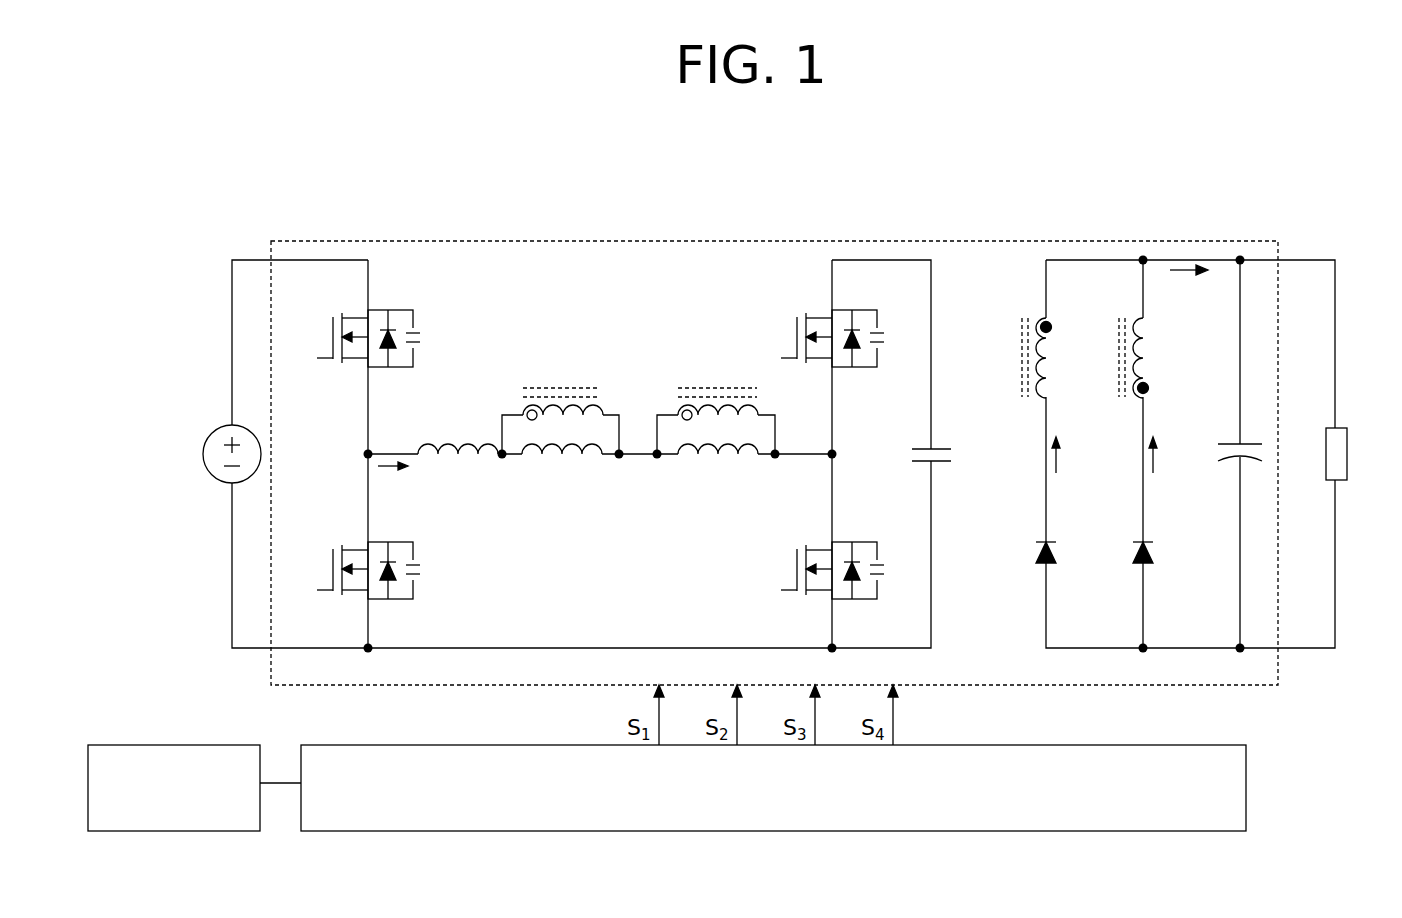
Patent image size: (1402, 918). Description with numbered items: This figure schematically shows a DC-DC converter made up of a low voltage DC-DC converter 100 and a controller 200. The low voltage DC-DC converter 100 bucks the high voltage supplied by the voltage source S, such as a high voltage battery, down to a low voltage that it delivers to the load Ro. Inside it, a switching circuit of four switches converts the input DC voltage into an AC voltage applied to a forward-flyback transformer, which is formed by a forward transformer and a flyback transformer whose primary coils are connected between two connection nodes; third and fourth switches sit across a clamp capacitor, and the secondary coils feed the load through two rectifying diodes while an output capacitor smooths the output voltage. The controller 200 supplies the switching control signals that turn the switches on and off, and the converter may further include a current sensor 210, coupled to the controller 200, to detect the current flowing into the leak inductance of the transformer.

The low voltage DC-DC converter 100 is at (1187, 241).
The controller 200 is at (1247, 787).
The current sensor 210 is at (172, 745).